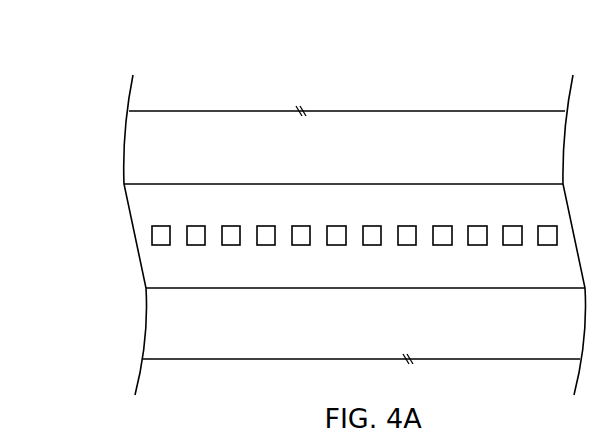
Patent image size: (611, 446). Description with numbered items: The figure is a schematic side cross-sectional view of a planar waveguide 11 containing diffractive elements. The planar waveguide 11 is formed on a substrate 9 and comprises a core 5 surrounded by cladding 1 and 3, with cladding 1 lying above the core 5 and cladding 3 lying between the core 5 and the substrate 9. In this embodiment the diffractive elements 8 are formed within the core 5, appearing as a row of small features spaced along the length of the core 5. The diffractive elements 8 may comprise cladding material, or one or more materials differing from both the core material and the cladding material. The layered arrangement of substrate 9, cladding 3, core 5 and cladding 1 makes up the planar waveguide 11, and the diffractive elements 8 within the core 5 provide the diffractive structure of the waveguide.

The cladding 1 is at (201, 163).
The cladding 3 is at (310, 341).
The core 5 is at (220, 281).
The diffractive elements 8 is at (338, 236).
The substrate 9 is at (239, 391).
The planar waveguide 11 is at (106, 336).